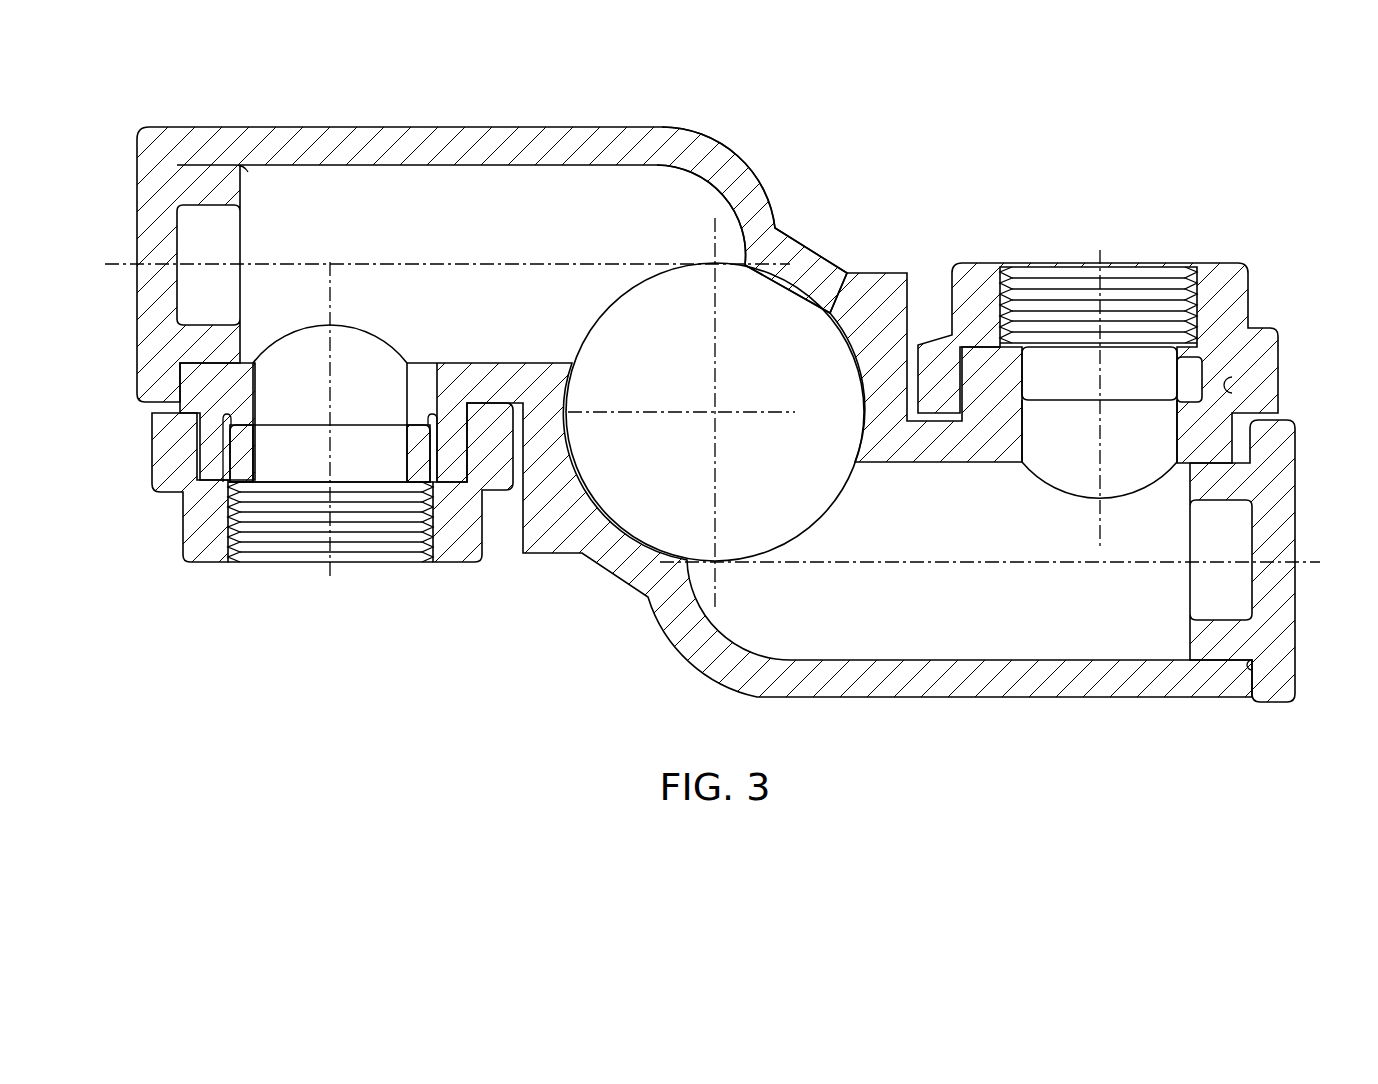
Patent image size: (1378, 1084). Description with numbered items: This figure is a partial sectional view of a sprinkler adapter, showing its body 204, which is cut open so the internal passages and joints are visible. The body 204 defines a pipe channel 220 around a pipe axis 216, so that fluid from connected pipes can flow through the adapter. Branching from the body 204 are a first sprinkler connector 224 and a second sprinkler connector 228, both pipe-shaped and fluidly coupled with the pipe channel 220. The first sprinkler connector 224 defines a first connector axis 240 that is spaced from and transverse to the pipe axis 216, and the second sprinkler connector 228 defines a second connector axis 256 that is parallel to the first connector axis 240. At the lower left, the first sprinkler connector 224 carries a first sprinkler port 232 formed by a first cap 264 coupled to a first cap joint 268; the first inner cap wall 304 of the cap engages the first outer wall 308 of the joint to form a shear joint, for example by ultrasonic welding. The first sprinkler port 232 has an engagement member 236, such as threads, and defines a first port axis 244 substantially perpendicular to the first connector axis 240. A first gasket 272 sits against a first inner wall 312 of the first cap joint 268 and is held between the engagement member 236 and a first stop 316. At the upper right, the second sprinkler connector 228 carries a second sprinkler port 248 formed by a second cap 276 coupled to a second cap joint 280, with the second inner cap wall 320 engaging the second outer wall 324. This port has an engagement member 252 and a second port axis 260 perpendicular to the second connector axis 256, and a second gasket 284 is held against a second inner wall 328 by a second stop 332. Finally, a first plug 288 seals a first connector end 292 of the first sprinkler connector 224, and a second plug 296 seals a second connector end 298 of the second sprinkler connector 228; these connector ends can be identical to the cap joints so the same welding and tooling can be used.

The body 204 is at (708, 408).
The pipe axis 216 is at (720, 412).
The pipe channel 220 is at (818, 308).
The first sprinkler connector 224 is at (452, 150).
The second sprinkler connector 228 is at (1108, 675).
The first sprinkler port 232 is at (720, 464).
The engagement member 236 is at (390, 533).
The first connector axis 240 is at (560, 260).
The first port axis 244 is at (313, 548).
The second sprinkler port 248 is at (1125, 360).
The engagement member 252 is at (1052, 283).
The second connector axis 256 is at (886, 568).
The second port axis 260 is at (1105, 298).
The first cap 264 is at (463, 540).
The first cap joint 268 is at (200, 388).
The first gasket 272 is at (417, 460).
The second cap 276 is at (978, 280).
The second cap joint 280 is at (1267, 580).
The second gasket 284 is at (1187, 350).
The first plug 288 is at (163, 160).
The first connector end 292 is at (244, 175).
The second plug 296 is at (1270, 690).
The second connector end 298 is at (1207, 677).
The first inner cap wall 304 is at (455, 455).
The first outer wall 308 is at (200, 390).
The first inner wall 312 is at (245, 440).
The first stop 316 is at (247, 410).
The second inner cap wall 320 is at (1245, 387).
The second outer wall 324 is at (948, 355).
The second inner wall 328 is at (1203, 370).
The second stop 332 is at (1010, 420).